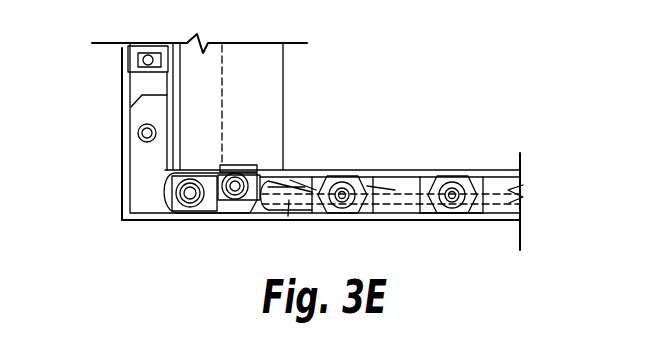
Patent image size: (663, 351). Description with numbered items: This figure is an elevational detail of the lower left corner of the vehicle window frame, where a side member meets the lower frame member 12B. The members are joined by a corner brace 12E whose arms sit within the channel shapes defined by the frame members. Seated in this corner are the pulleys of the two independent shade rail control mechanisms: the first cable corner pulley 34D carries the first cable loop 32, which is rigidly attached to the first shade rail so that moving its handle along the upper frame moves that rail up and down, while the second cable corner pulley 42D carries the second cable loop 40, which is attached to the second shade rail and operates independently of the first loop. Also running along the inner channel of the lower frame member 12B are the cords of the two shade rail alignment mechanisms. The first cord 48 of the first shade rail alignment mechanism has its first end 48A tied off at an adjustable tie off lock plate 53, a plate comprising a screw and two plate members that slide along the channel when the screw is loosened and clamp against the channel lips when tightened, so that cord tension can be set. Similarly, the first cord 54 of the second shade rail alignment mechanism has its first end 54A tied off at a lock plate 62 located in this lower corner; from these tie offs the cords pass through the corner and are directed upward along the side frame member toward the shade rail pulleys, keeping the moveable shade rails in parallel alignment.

The first cable loop 32 is at (223, 62).
The corner brace 12E is at (149, 175).
The lower frame member 12B is at (422, 215).
The second cable loop 40 is at (186, 125).
The first cable corner pulley 34D is at (237, 165).
The second cable corner pulley 42D is at (163, 203).
The first cord 48 is at (303, 183).
The first end of first cord 48A is at (316, 190).
The first cord 54 is at (392, 186).
The adjustable tie off lock plate 53 is at (348, 217).
The lock plate 62 is at (467, 186).
The first end of first cord 54A is at (434, 215).